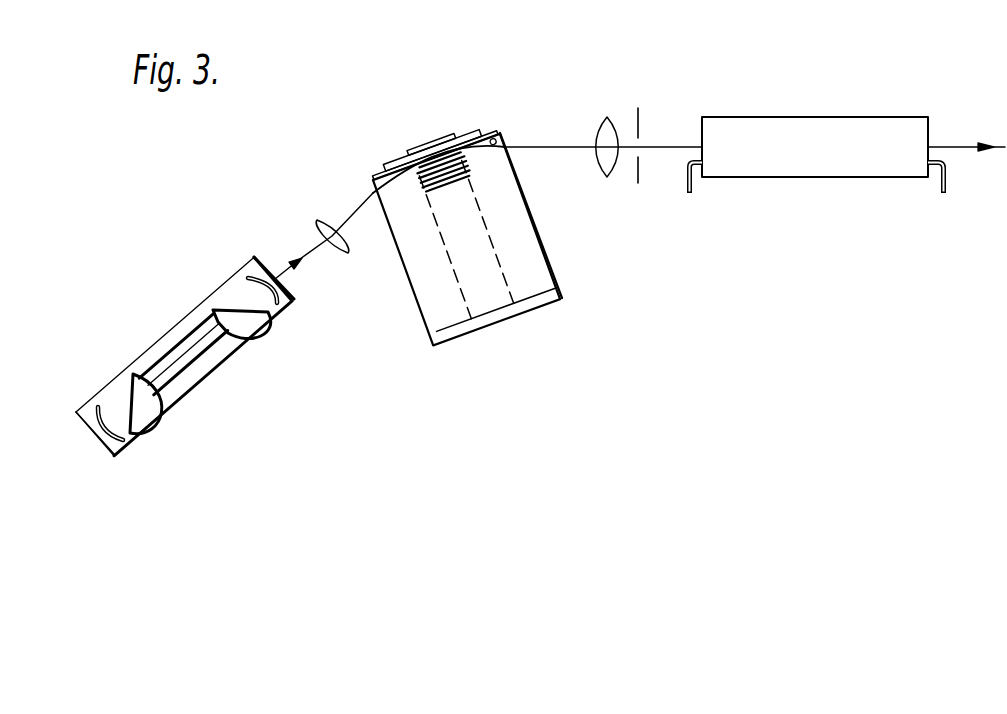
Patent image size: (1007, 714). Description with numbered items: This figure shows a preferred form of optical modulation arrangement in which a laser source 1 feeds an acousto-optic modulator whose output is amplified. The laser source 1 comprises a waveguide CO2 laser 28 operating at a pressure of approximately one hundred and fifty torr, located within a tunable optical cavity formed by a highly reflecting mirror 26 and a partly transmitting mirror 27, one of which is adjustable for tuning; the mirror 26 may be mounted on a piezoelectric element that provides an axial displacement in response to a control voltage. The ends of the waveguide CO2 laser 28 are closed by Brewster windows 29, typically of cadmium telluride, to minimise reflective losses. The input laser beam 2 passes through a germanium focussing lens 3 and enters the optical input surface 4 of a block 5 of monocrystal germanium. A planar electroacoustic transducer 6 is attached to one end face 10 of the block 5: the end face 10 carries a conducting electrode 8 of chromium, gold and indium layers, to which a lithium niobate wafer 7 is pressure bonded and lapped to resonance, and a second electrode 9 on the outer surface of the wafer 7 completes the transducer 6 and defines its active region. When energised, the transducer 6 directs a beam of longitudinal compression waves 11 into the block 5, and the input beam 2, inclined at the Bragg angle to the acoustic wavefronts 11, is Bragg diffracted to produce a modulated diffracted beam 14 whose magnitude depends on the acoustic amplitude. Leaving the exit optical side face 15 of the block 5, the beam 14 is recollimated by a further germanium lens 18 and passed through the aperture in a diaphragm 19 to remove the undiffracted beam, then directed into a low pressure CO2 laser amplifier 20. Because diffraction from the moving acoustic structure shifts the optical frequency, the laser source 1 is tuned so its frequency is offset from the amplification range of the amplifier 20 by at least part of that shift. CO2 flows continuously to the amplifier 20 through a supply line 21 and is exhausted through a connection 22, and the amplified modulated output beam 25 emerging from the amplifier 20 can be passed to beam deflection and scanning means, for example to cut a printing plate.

The laser source 1 is at (208, 297).
The input laser beam 2 is at (314, 262).
The focussing lens 3 is at (316, 221).
The optical input surface 4 is at (417, 298).
The block 5 is at (452, 323).
The electroacoustic transducer 6 is at (393, 142).
The wafer 7 is at (463, 133).
The conducting electrode 8 is at (487, 135).
The second electrode 9 is at (425, 142).
The end face 10 is at (503, 140).
The longitudinal compression waves 11 is at (470, 173).
The diffracted beam 14 is at (560, 145).
The exit optical side face 15 is at (545, 250).
The germanium lens 18 is at (612, 123).
The diaphragm 19 is at (642, 117).
The laser amplifier 20 is at (805, 117).
The supply line 21 is at (687, 184).
The connection 22 is at (947, 187).
The amplified modulated output beam 25 is at (948, 145).
The highly reflecting mirror 26 is at (98, 410).
The partly transmitting mirror 27 is at (294, 298).
The waveguide CO2 laser 28 is at (207, 376).
The Brewster windows 29 is at (227, 308).